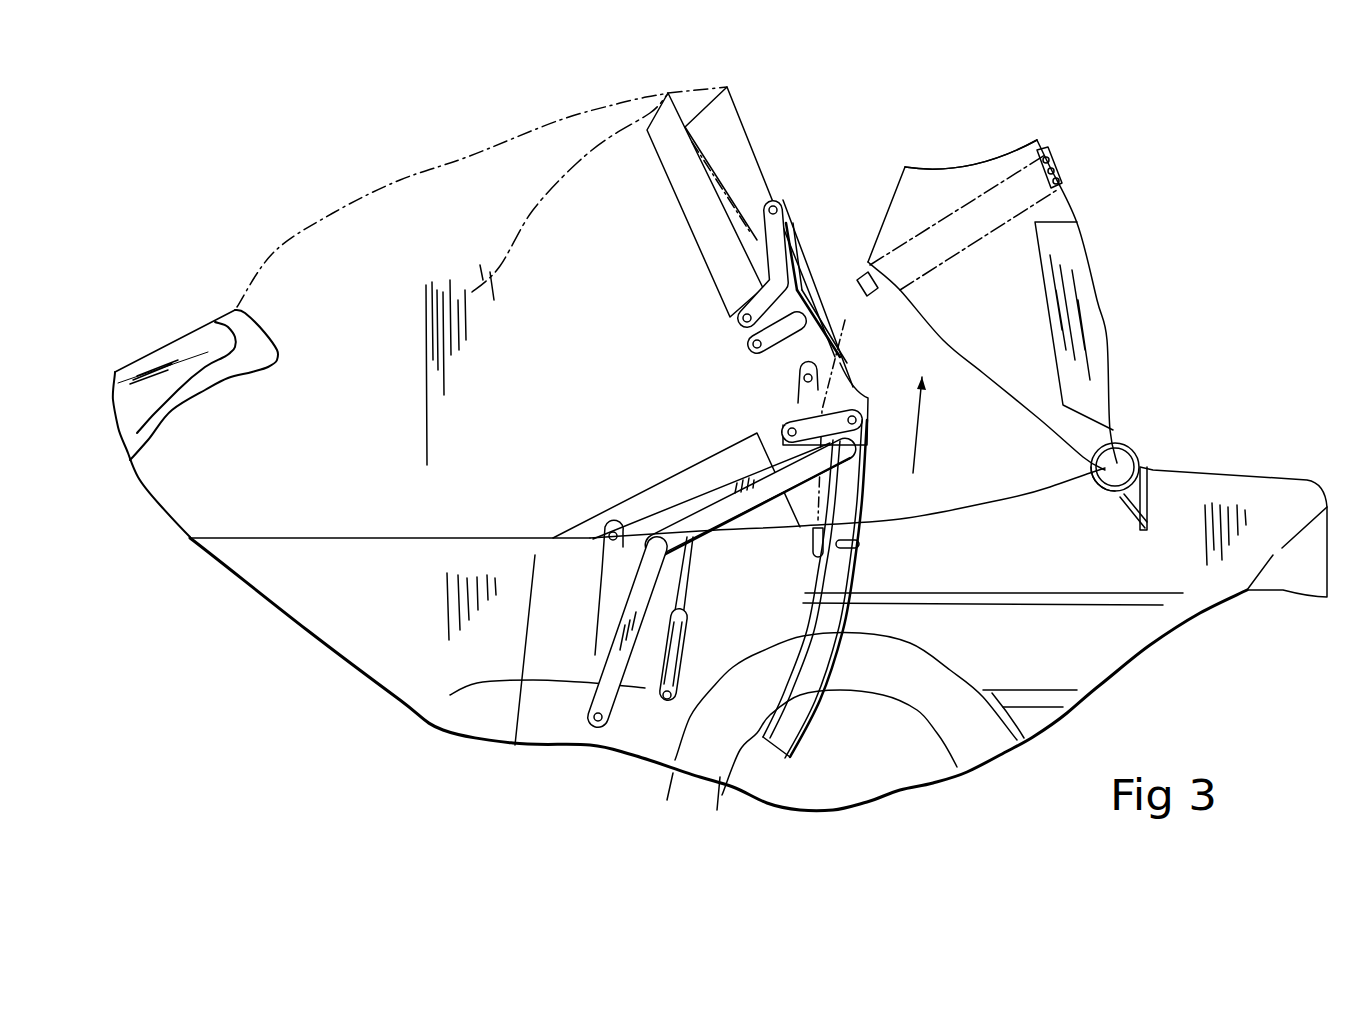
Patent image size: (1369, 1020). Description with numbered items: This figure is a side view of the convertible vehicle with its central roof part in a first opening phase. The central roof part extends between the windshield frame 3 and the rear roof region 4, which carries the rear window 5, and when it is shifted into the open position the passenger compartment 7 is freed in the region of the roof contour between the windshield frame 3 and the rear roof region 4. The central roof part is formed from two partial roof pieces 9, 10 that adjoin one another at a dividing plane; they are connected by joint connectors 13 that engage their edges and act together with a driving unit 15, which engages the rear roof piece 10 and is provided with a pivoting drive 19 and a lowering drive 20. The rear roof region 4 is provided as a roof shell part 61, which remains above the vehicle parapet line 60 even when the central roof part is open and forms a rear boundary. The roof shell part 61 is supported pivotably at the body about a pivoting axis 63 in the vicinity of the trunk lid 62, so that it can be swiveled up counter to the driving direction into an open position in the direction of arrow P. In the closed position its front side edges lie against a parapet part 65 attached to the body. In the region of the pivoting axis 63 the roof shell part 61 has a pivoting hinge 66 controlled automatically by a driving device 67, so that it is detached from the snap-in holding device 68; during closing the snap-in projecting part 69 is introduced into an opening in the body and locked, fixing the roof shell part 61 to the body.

The windshield frame 3 is at (233, 318).
The rear roof region 4 is at (983, 150).
The rear window 5 is at (1097, 387).
The passenger compartment 7 is at (356, 452).
The partial roof piece 9 is at (657, 130).
The partial roof piece 10 is at (753, 163).
The joint connector 13 is at (660, 235).
The driving unit 15 is at (557, 805).
The pivoting drive 19 is at (783, 408).
The lowering drive 20 is at (650, 507).
The vehicle parapet line 60 is at (967, 510).
The roof shell part 61 is at (1011, 307).
The trunk lid 62 is at (1263, 477).
The pivoting axis 63 is at (1115, 465).
The parapet part 65 is at (760, 515).
The pivoting hinge 66 is at (1090, 490).
The driving device 67 is at (1123, 522).
The snap-in holding device 68 is at (805, 560).
The snap-in projecting part 69 is at (860, 278).
The arrow P is at (918, 435).